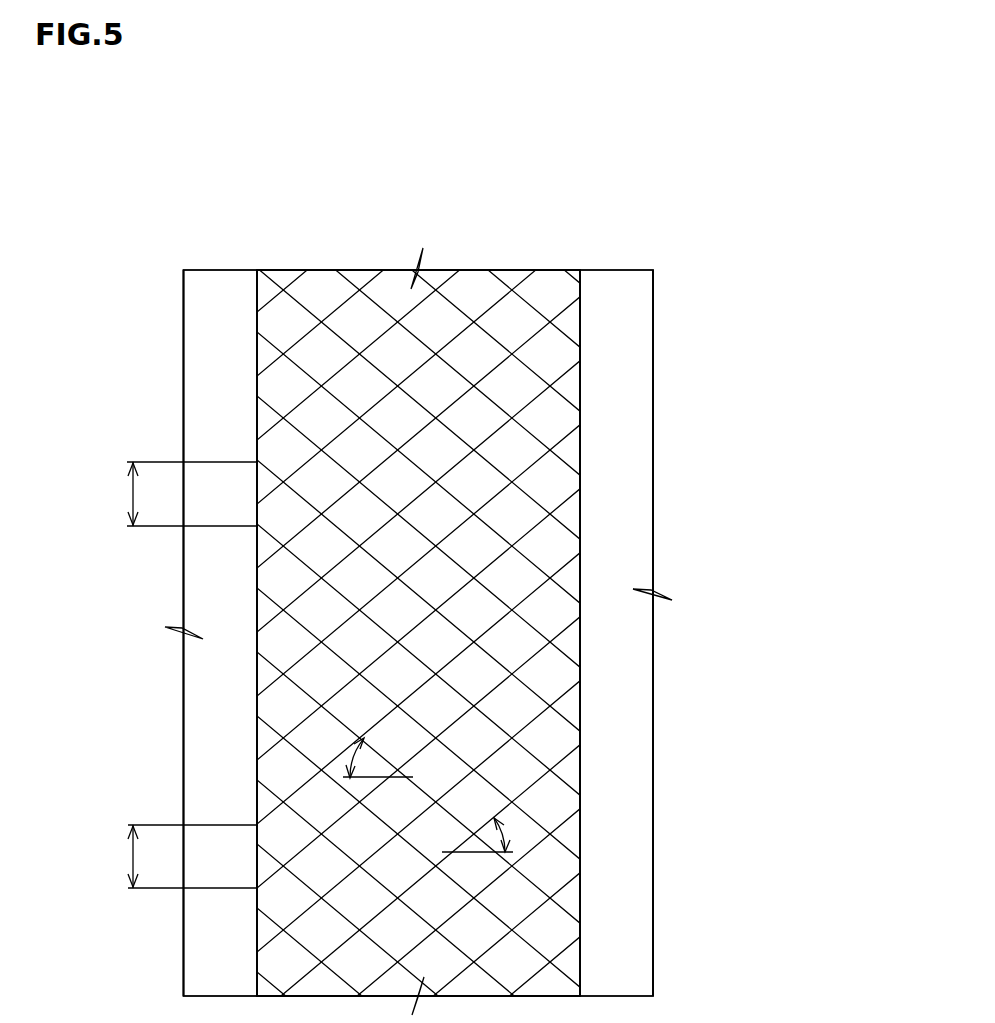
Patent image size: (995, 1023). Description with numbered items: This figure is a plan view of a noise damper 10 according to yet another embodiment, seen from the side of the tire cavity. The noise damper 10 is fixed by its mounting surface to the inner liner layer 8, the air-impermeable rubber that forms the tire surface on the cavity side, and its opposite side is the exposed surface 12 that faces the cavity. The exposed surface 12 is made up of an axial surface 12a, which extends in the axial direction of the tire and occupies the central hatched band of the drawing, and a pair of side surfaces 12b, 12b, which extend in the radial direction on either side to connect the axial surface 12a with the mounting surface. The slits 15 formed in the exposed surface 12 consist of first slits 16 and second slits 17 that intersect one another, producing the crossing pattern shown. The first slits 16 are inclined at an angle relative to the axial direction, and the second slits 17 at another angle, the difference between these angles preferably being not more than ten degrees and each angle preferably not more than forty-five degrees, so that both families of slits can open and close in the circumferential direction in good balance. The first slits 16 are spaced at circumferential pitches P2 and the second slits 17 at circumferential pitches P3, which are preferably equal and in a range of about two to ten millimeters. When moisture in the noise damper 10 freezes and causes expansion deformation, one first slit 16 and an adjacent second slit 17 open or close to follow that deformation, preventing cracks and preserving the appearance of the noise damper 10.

The inner liner layer 8 is at (218, 390).
The noise damper 10 is at (531, 517).
The exposed surface 12 is at (419, 561).
The axial surface 12a is at (473, 290).
The side surface 12b is at (257, 322).
The slits 15 is at (531, 517).
The first slits 16 is at (580, 323).
The second slits 17 is at (562, 572).
The circumferential pitch of the first slits P2 is at (175, 494).
The circumferential pitch of the second slits P3 is at (173, 856).